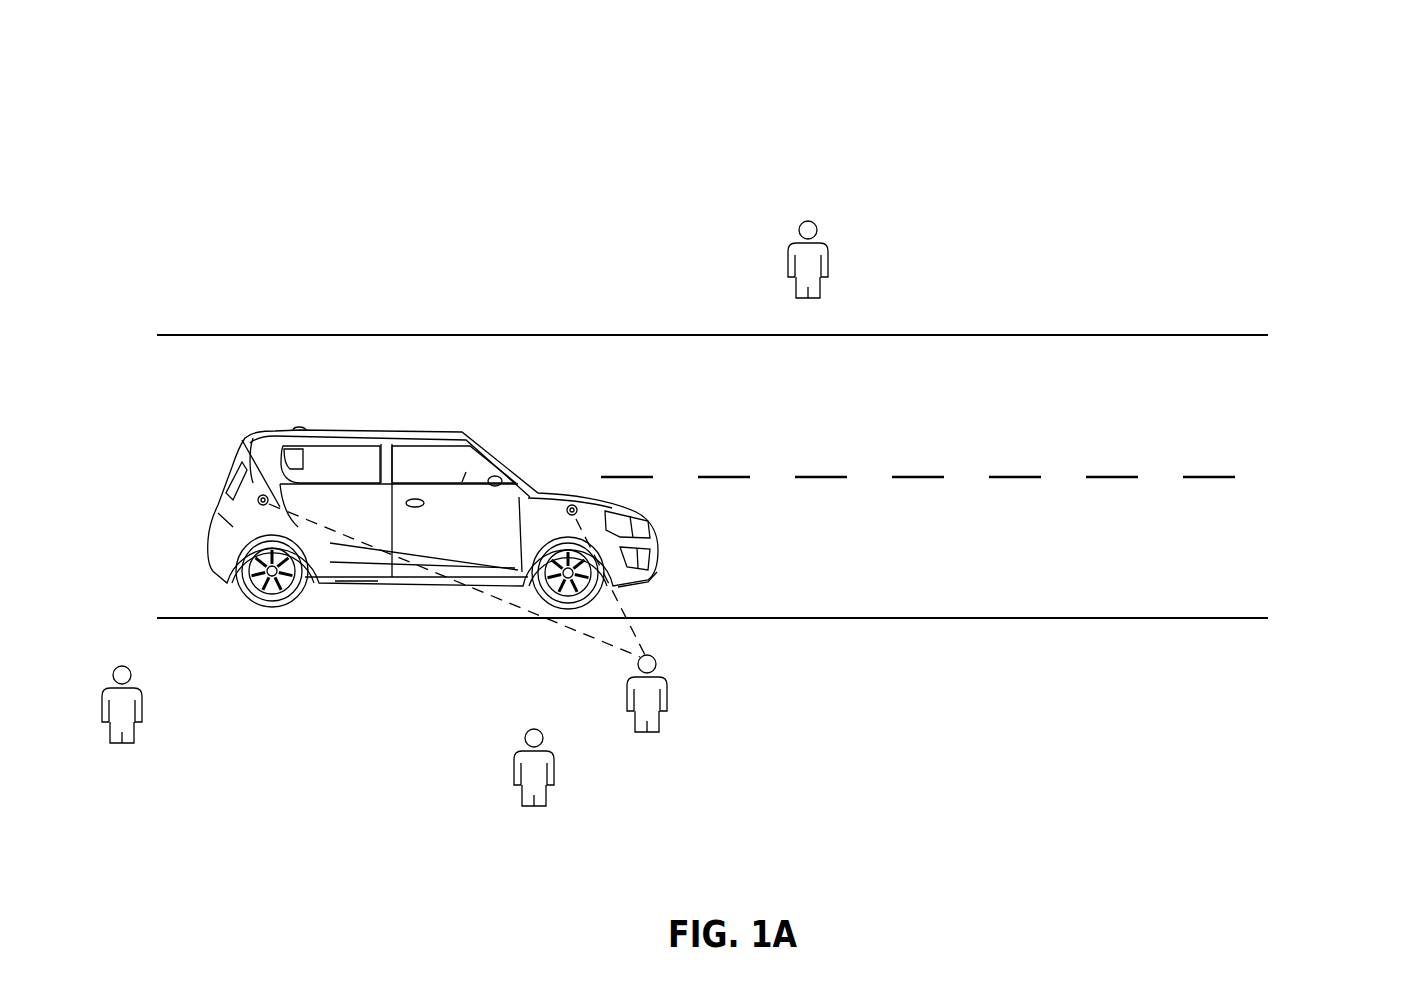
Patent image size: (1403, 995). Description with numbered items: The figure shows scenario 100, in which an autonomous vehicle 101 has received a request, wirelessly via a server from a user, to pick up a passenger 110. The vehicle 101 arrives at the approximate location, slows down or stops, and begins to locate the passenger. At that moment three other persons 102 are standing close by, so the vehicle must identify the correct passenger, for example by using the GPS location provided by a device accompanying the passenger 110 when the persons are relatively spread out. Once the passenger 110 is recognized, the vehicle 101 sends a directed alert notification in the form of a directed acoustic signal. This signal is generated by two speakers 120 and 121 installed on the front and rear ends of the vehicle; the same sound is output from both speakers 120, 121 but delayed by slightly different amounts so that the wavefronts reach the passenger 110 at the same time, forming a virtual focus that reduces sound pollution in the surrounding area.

The scenario 100 is at (1270, 95).
The autonomous vehicle 101 is at (392, 404).
The other persons 102 is at (833, 243).
The passenger 110 is at (683, 693).
The speaker 120 is at (573, 500).
The speaker 121 is at (253, 480).